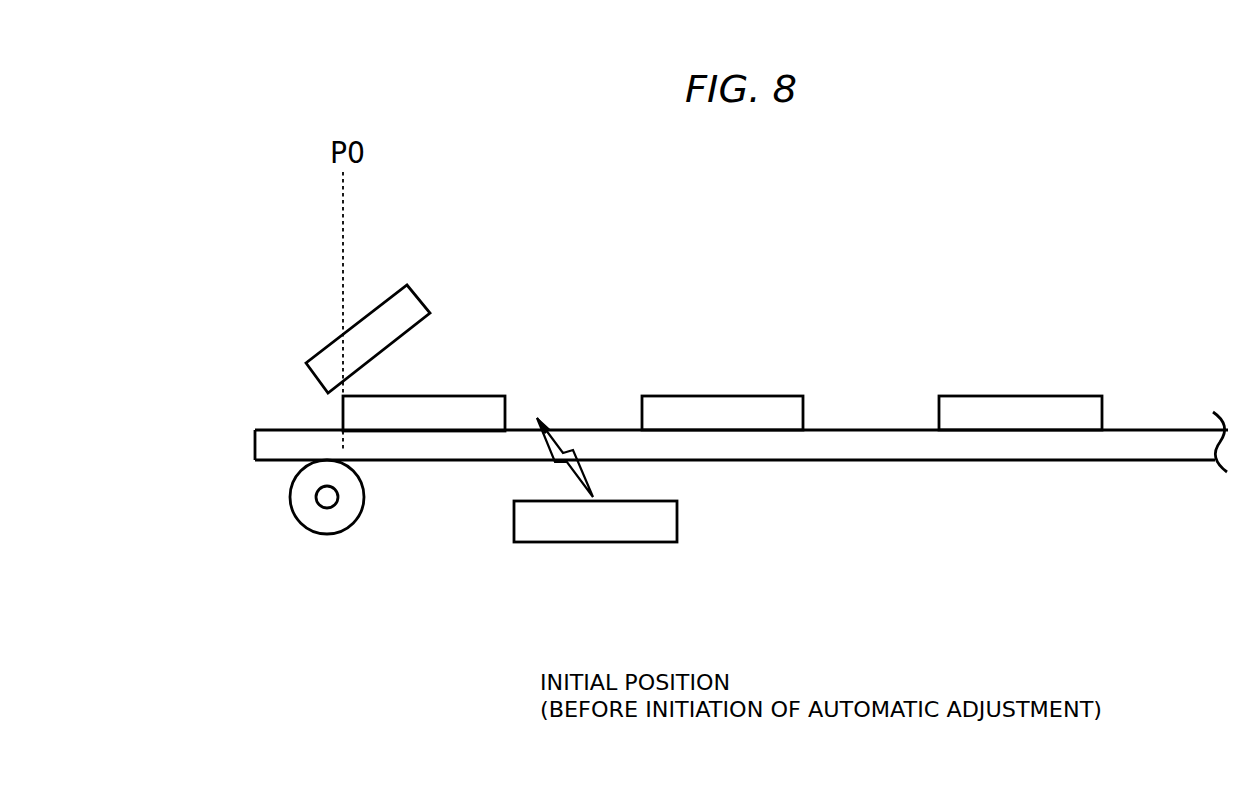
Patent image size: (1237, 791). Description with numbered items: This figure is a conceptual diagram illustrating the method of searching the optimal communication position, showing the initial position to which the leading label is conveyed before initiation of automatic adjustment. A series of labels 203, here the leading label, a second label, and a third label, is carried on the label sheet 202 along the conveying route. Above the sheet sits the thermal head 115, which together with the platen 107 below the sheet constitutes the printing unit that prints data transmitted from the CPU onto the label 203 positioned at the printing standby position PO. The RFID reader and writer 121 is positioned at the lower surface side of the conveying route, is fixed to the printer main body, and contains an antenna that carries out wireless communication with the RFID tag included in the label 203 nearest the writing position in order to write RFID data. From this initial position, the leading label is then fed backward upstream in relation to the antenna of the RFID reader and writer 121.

The platen 107 is at (327, 534).
The thermal head 115 is at (405, 287).
The RFID reader and writer 121 is at (602, 542).
The label sheet (web) 202 is at (887, 452).
The label 203 is at (477, 396).